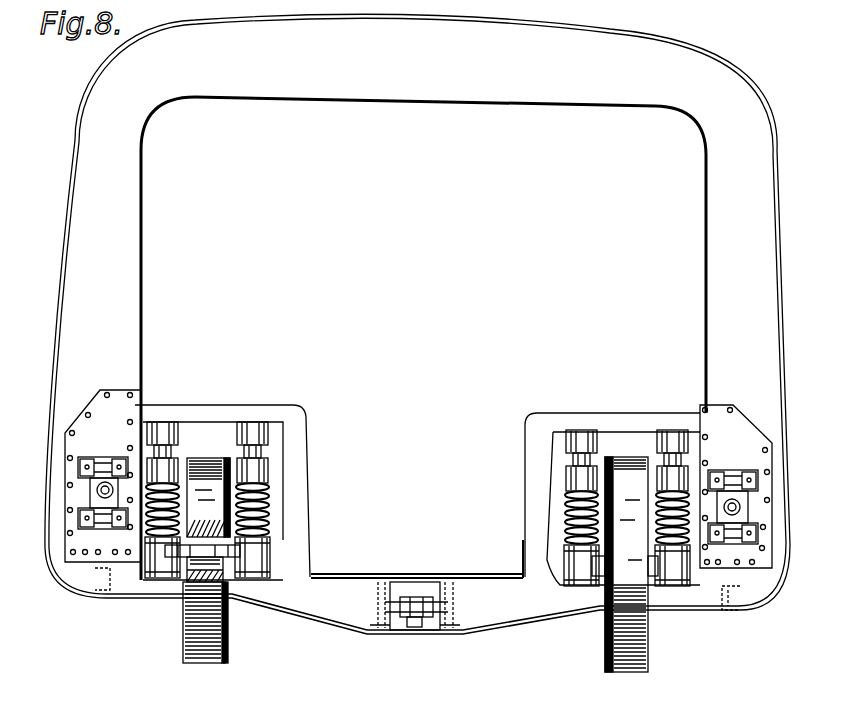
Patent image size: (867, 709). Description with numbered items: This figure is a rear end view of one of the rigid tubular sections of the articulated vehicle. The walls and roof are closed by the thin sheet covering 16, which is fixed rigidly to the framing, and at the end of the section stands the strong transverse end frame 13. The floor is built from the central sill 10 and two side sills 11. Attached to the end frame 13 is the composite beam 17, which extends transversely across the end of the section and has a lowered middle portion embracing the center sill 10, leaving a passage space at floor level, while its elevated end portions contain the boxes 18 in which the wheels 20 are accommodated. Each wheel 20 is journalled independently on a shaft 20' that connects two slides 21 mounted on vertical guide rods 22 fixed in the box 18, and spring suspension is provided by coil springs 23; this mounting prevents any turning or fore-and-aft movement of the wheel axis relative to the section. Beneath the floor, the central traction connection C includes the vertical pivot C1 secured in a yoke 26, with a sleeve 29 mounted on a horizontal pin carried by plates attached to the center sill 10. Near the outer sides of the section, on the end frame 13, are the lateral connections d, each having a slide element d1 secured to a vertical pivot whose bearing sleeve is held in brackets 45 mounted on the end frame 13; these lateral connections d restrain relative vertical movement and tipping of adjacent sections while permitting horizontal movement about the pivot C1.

The sheet covering 16 is at (72, 203).
The end frame 13 is at (127, 288).
The central sill 10 is at (398, 622).
The composite beam 17 is at (297, 505).
The box 18 is at (203, 437).
The vertical guide rod 22 is at (157, 449).
The coil spring 23 is at (567, 518).
The slide 21 is at (265, 547).
The wheel 20 is at (415, 564).
The shaft 20' is at (183, 594).
The bracket 45 is at (86, 449).
The lateral connection d is at (80, 492).
The slide element d1 is at (97, 485).
The side sill 11 is at (77, 590).
The yoke 26 is at (407, 598).
The vertical pivot C1 is at (413, 598).
The sleeve 29 is at (438, 598).
The central connection C is at (422, 622).